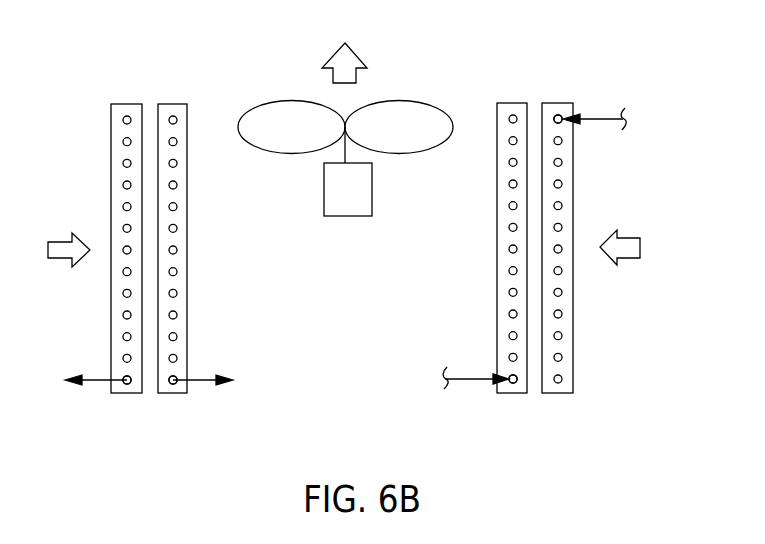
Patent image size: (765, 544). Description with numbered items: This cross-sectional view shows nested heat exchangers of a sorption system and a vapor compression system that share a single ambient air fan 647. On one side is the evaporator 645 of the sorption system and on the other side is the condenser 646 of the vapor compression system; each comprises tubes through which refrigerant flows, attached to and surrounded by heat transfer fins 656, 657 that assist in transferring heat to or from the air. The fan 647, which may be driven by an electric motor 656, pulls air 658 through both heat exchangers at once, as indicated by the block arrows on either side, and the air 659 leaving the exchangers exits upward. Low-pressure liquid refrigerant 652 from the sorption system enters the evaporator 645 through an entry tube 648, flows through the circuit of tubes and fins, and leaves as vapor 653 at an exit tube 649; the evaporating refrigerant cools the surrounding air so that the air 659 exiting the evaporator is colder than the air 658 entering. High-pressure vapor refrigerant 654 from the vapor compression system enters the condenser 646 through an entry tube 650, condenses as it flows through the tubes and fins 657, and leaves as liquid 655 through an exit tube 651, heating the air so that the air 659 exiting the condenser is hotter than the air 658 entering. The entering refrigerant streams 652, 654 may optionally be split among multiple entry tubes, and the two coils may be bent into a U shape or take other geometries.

The evaporator 645 is at (573, 175).
The condenser 646 is at (187, 223).
The ambient air fan 647 is at (418, 112).
The entry tube 648 is at (563, 114).
The exit tube 649 is at (124, 388).
The entry tube 650 is at (510, 388).
The exit tube 651 is at (170, 388).
The liquid refrigerant 652 is at (617, 108).
The vapor 653 is at (88, 385).
The vapor refrigerant 654 is at (470, 385).
The liquid 655 is at (202, 385).
The electric motor 656 is at (173, 103).
The fins 657 is at (125, 103).
The air 658 is at (53, 238).
The exiting air 659 is at (355, 53).